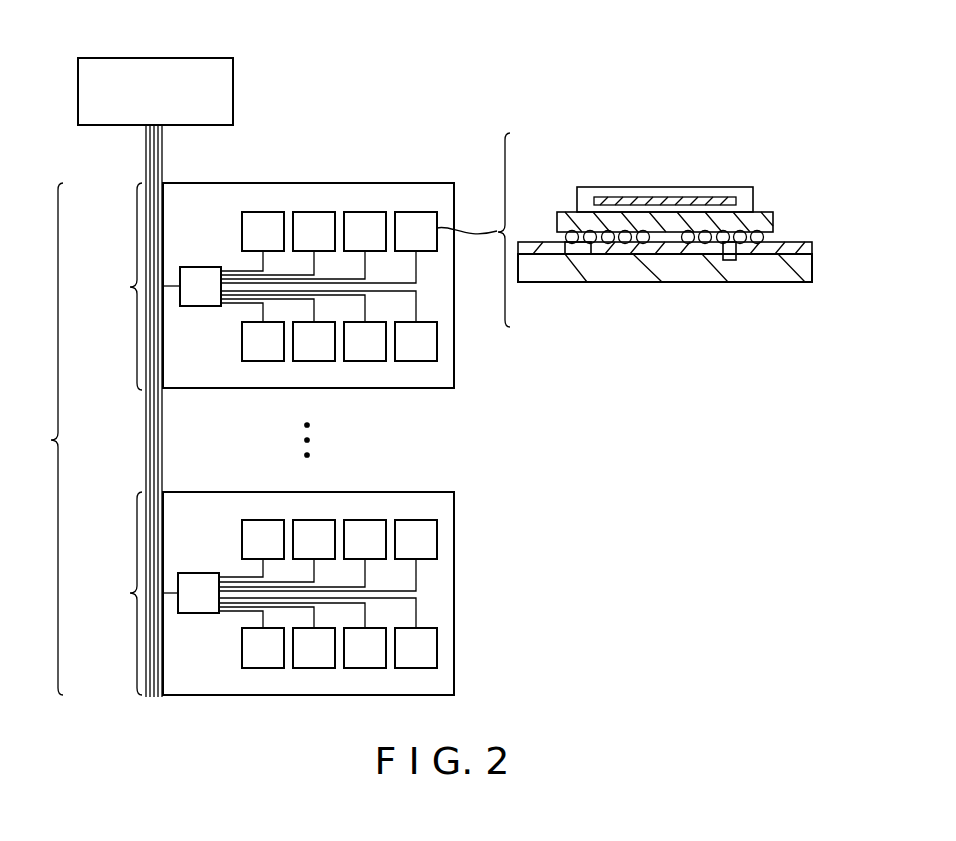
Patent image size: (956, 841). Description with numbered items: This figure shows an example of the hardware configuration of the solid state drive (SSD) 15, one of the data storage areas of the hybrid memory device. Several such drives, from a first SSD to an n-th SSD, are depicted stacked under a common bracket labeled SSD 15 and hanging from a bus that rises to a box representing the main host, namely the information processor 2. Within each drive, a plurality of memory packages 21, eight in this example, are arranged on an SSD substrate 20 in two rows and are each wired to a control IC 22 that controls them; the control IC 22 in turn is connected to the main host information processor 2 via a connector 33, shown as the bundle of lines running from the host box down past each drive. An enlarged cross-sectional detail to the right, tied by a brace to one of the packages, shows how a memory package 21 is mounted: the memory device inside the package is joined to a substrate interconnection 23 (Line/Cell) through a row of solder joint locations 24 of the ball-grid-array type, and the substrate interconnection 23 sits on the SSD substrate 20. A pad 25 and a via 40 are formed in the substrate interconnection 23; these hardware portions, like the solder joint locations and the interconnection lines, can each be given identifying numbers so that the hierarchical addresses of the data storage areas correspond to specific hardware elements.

The information processor 2 is at (200, 58).
The connector 33 is at (165, 154).
The solid state drive 15 is at (82, 439).
The SSD substrate 20 is at (357, 388).
The memory package 21 is at (428, 361).
The control IC 22 is at (198, 306).
The substrate interconnection 23 is at (420, 265).
The solder joint location 24 is at (773, 232).
The pad 25 is at (585, 254).
The via 40 is at (729, 260).